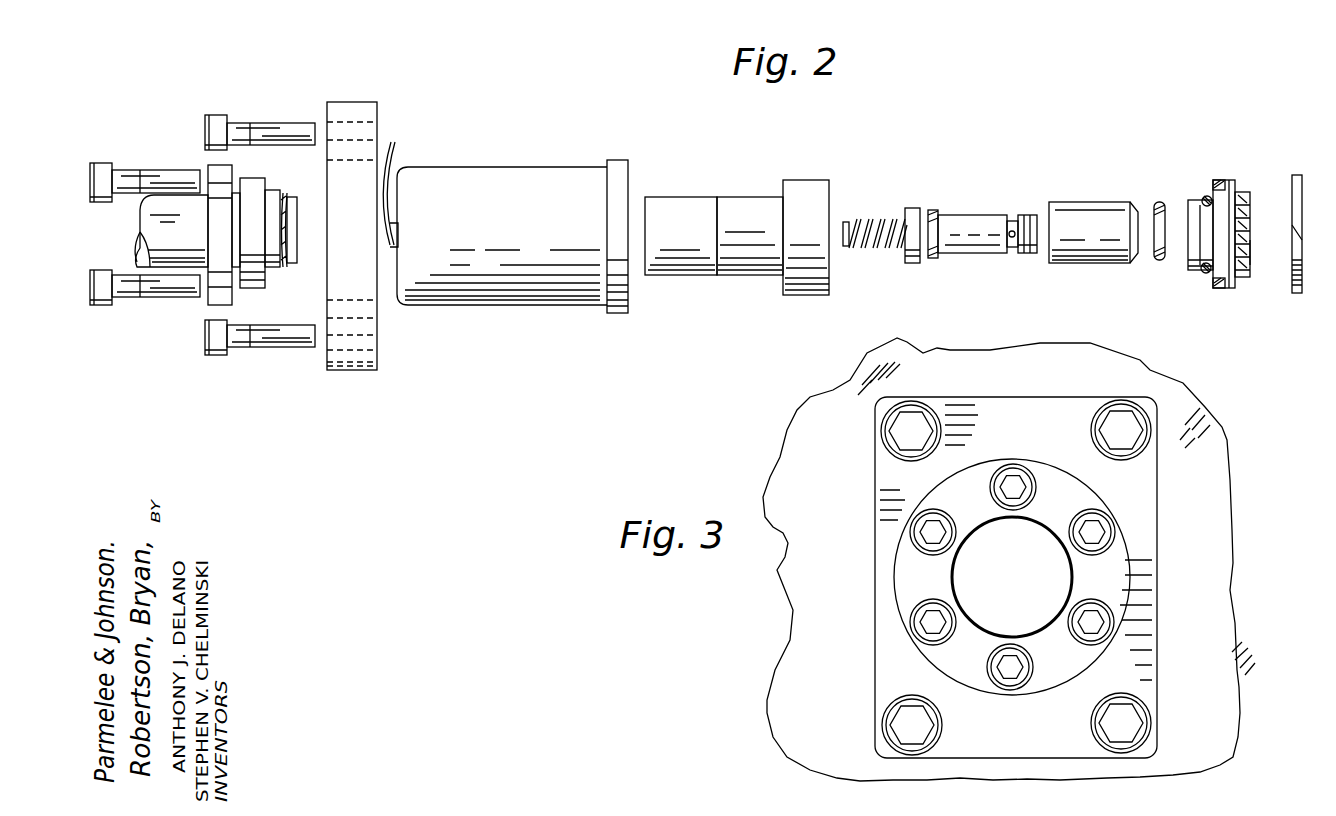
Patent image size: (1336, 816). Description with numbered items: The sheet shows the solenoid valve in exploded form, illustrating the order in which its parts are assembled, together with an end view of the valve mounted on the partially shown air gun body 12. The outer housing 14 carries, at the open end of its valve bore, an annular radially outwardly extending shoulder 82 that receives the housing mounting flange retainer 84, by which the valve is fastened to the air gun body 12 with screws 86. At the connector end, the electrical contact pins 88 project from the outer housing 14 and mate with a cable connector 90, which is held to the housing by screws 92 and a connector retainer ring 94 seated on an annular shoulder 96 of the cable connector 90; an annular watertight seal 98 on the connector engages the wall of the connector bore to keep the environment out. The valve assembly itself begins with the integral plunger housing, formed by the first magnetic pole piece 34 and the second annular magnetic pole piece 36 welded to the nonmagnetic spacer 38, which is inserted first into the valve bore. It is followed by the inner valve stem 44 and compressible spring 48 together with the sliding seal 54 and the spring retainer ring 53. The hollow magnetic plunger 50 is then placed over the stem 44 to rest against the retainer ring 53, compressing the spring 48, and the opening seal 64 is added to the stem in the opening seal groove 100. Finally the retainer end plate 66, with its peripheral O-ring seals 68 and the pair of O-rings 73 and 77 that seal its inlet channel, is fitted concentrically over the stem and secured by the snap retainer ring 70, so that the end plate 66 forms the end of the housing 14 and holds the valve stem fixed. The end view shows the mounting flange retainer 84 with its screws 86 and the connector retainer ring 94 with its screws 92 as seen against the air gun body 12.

In FIG. 3, the air gun body 12 is at (1205, 495).
In FIG. 2, the outer housing 14 is at (540, 305).
In FIG. 2, the first magnetic pole piece 34 is at (668, 197).
In FIG. 2, the second annular magnetic pole piece 36 is at (806, 180).
In FIG. 2, the annular nonmagnetic spacer 38 is at (748, 197).
In FIG. 2, the inner valve stem 44 is at (980, 215).
In FIG. 2, the compressible spring 48 is at (867, 216).
In FIG. 2, the magnetic plunger 50 is at (1099, 202).
In FIG. 2, the retainer ring 53 is at (912, 208).
In FIG. 2, the sliding seal 54 is at (933, 210).
In FIG. 2, the opening seal 64 is at (1159, 202).
In FIG. 2, the retainer end plate 66 is at (1228, 180).
In FIG. 2, the peripheral O-ring seals 68 is at (1219, 180).
In FIG. 2, the snap retainer ring 70 is at (1298, 175).
In FIG. 2, the O-ring 73 is at (1249, 265).
In FIG. 2, the O-ring 77 is at (1246, 215).
In FIG. 2, the annular shoulder 82 is at (623, 160).
In FIG. 2, the housing mounting flange retainer 84 is at (360, 102).
In FIG. 3, the housing mounting flange retainer 84 is at (1017, 397).
In FIG. 2, the screws 86 is at (237, 120).
In FIG. 3, the screws 86 is at (893, 455).
In FIG. 2, the electrical contact pins 88 is at (390, 160).
In FIG. 2, the cable connector 90 is at (278, 270).
In FIG. 2, the screws 92 is at (128, 168).
In FIG. 3, the screws 92 is at (1028, 470).
In FIG. 2, the connector retainer ring 94 is at (207, 303).
In FIG. 3, the connector retainer ring 94 is at (1113, 577).
In FIG. 2, the annular shoulder 96 is at (258, 288).
In FIG. 2, the annular watertight seal 98 is at (283, 197).
In FIG. 2, the opening seal groove 100 is at (1024, 215).